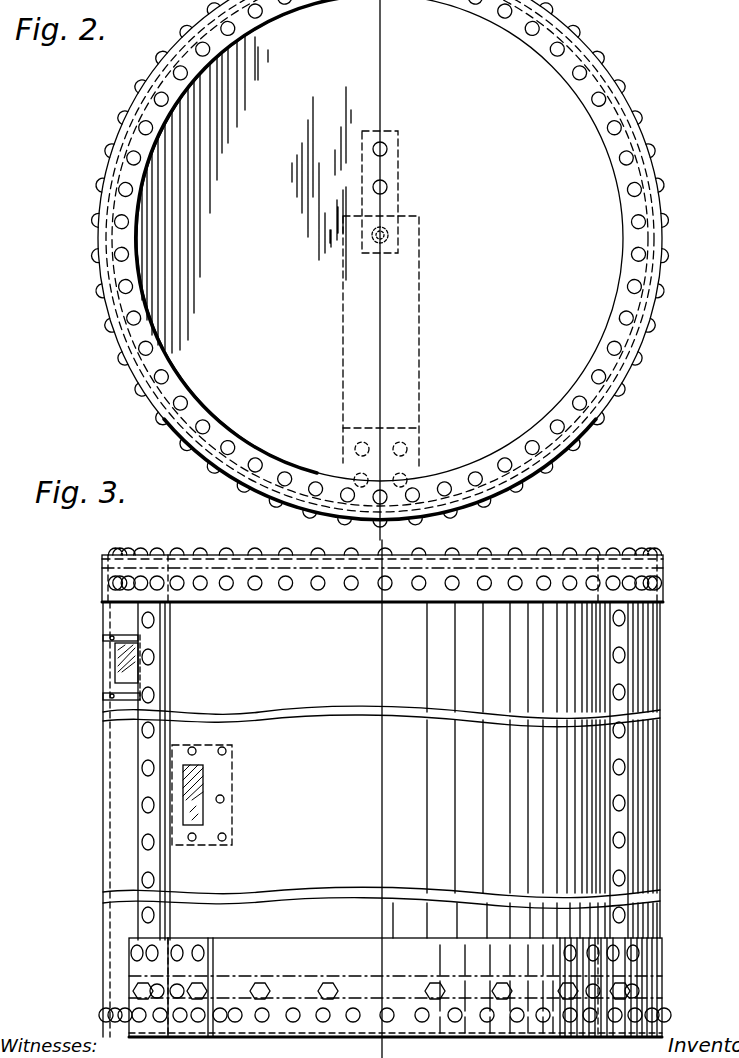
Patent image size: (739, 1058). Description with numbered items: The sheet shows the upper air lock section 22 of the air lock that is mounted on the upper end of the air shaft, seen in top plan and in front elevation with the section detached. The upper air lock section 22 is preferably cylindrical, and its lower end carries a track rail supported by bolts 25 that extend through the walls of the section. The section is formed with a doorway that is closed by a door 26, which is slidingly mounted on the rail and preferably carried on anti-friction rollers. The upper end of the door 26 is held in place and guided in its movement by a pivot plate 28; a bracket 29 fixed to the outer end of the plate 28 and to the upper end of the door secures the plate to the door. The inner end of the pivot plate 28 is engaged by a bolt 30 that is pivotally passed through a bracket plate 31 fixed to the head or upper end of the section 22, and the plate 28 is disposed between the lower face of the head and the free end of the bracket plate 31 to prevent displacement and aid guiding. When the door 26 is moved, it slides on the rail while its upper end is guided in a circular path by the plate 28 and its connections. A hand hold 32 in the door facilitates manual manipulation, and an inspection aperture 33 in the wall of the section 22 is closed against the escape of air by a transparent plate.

In FIG. 2, the upper air lock section 22 is at (602, 197).
In FIG. 3, the upper air lock section 22 is at (643, 670).
In FIG. 3, the bolts 25 is at (133, 994).
In FIG. 3, the door 26 is at (567, 856).
In FIG. 2, the pivot plate 28 is at (397, 347).
In FIG. 2, the bracket 29 is at (405, 455).
In FIG. 2, the bolt 30 is at (389, 238).
In FIG. 2, the bracket plate 31 is at (385, 210).
In FIG. 3, the hand hold 32 is at (196, 800).
In FIG. 3, the inspection aperture 33 is at (125, 668).